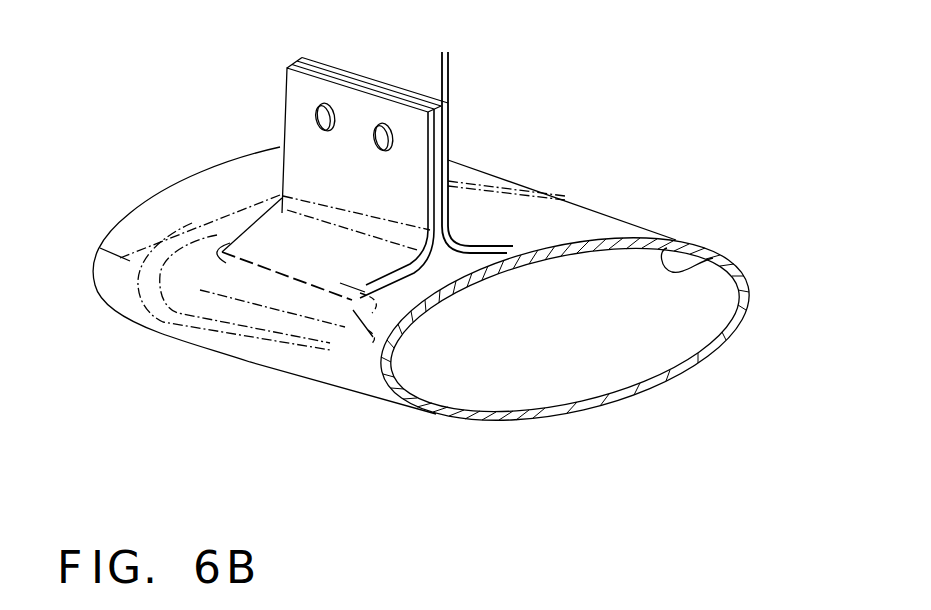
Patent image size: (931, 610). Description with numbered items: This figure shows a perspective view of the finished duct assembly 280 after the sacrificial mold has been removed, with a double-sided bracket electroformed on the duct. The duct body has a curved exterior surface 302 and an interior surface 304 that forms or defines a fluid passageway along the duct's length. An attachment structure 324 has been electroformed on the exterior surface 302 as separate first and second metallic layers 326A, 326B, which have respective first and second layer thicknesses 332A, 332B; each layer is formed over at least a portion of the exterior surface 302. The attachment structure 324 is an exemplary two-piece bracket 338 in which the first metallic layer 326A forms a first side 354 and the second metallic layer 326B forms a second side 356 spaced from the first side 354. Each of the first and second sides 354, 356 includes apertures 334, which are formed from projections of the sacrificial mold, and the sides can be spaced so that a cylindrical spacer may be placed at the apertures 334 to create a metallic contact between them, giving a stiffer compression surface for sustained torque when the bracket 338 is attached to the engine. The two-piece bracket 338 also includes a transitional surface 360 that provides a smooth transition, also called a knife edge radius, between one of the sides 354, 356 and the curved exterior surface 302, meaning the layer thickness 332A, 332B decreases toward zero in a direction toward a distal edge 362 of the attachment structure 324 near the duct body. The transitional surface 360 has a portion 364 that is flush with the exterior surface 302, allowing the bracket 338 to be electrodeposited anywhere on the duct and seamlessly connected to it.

The duct assembly 280 is at (680, 92).
The exterior surface 302 is at (594, 228).
The interior surface 304 is at (713, 258).
The attachment structure 324 is at (482, 123).
The first metallic layer 326A is at (297, 78).
The second metallic layer 326B is at (318, 62).
The first layer thickness 332A is at (383, 238).
The second layer thickness 332B is at (458, 60).
The apertures 334 is at (383, 150).
The two-piece bracket 338 is at (505, 156).
The first side 354 is at (300, 160).
The second side 356 is at (376, 83).
The transitional surface 360 is at (293, 270).
The distal edge 362 is at (240, 256).
The portion 364 is at (388, 345).